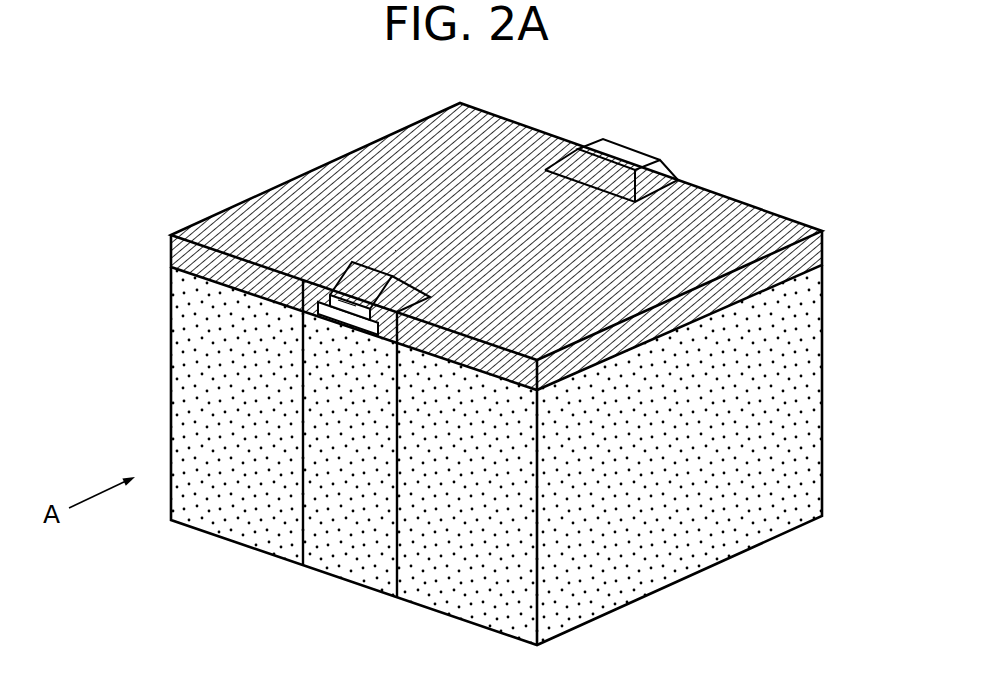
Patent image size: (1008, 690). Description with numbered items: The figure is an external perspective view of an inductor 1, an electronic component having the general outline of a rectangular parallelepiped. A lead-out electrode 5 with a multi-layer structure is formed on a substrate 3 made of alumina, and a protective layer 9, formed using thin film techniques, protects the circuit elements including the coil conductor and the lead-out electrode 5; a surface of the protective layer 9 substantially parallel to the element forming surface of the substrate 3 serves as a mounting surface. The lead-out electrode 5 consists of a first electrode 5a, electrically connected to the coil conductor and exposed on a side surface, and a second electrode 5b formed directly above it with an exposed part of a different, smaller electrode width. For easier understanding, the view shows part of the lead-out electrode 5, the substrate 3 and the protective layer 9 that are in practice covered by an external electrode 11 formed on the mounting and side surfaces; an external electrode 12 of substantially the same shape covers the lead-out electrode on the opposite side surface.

The inductor 1 is at (471, 354).
The substrate 3 is at (806, 388).
The lead-out electrode 5 is at (247, 305).
The first electrode 5a is at (345, 318).
The second electrode 5b is at (320, 304).
The protective layer 9 is at (822, 233).
The external electrode 11 is at (301, 520).
The external electrode 12 is at (577, 150).